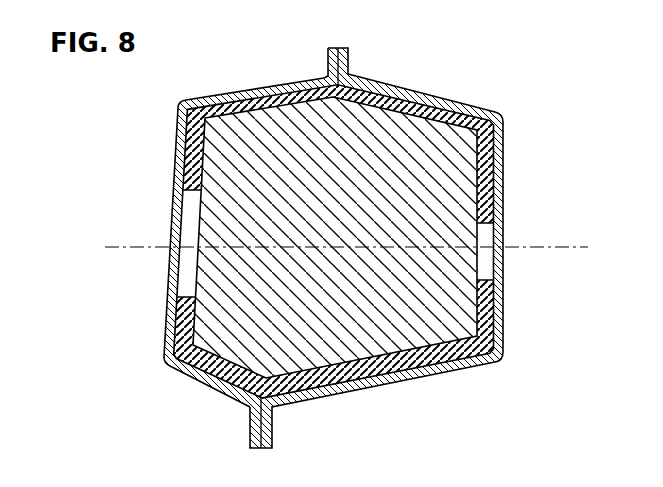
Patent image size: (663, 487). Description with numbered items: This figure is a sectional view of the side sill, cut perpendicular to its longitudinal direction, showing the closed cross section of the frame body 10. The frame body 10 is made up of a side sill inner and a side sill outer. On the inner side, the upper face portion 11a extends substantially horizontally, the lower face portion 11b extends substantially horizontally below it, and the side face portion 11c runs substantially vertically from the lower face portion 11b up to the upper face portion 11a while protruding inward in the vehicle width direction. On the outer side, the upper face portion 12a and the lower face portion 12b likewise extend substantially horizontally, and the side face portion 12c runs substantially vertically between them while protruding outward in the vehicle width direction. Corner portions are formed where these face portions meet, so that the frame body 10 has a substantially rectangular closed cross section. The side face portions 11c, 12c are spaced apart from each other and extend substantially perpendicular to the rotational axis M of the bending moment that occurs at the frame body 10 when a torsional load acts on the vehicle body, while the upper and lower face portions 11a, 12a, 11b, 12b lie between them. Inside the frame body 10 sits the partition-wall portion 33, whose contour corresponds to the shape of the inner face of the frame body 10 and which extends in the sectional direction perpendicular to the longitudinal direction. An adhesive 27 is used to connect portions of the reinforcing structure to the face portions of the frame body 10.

The frame body 10 is at (414, 88).
The upper face portion 11a is at (233, 93).
The lower face portion 11b is at (207, 385).
The side face portion 11c is at (173, 201).
The upper face portion 12a is at (353, 76).
The lower face portion 12b is at (421, 377).
The side face portion 12c is at (504, 177).
The adhesive 27 is at (458, 103).
The partition-wall portion 33 is at (457, 144).
The rotational axis M is at (357, 248).